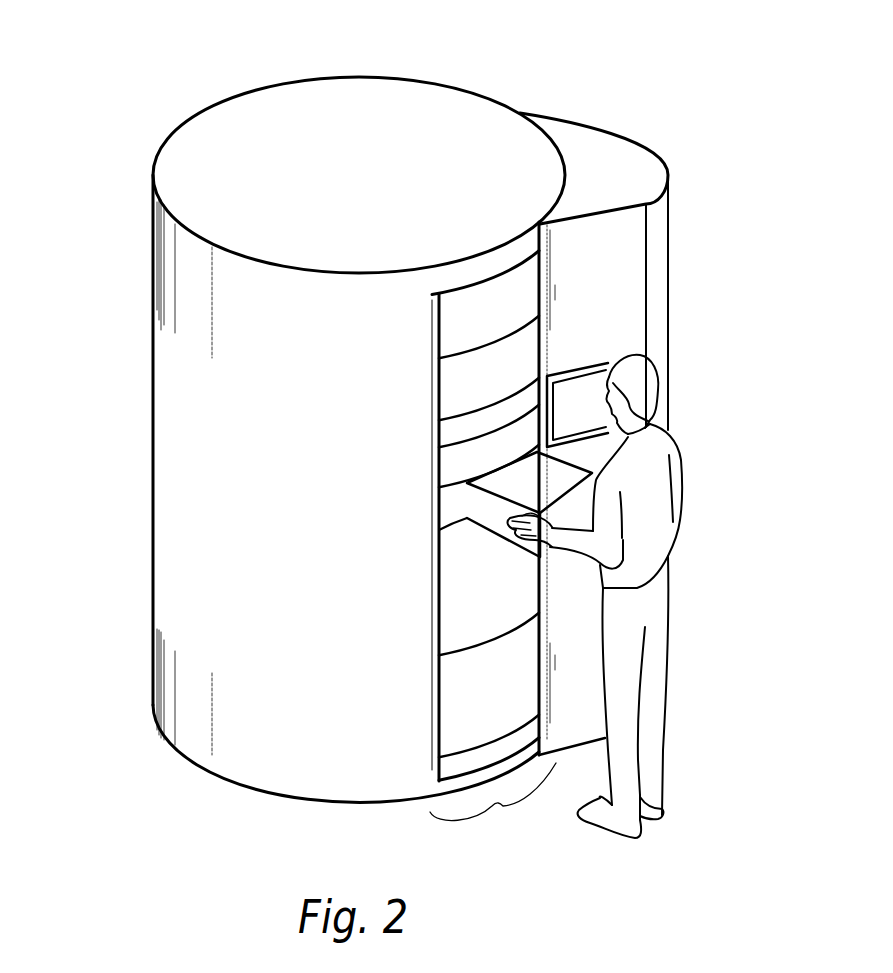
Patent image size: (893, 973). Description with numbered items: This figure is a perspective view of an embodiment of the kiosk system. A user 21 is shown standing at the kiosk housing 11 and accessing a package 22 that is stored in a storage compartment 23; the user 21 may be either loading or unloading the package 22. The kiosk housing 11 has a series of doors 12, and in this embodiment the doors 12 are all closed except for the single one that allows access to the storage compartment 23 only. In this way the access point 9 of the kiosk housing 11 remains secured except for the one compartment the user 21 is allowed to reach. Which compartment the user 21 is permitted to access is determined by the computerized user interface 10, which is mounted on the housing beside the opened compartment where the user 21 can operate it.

The access point 9 is at (496, 810).
The computerized user interface 10 is at (581, 385).
The kiosk housing 11 is at (181, 432).
The doors 12 is at (467, 428).
The user 21 is at (652, 542).
The package 22 is at (473, 505).
The storage compartment 23 is at (445, 518).